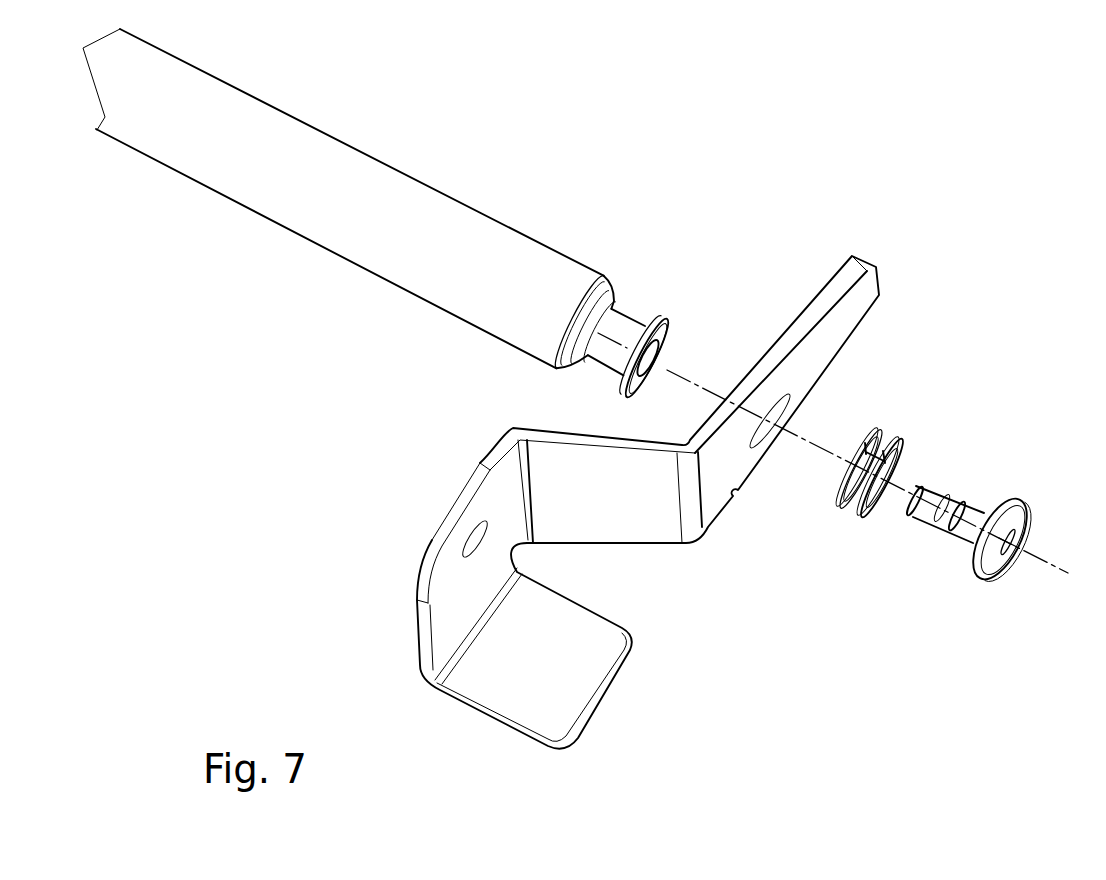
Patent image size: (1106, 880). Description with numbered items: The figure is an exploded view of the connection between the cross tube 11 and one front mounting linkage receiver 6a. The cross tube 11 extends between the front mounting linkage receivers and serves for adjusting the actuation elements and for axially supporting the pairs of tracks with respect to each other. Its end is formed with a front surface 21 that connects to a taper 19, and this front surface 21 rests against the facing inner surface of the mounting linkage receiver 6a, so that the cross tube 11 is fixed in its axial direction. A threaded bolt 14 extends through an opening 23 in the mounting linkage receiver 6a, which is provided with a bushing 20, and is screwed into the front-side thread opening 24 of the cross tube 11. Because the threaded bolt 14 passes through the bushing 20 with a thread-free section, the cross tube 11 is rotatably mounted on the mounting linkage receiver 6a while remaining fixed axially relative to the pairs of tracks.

The cross tube 11 is at (425, 217).
The taper 19 is at (629, 316).
The front-side thread opening 24 is at (659, 343).
The front surface 21 is at (657, 388).
The opening 23 is at (778, 412).
The bushing 20 is at (900, 442).
The threaded bolt 14 is at (1005, 505).
The mounting linkage receiver 6a is at (623, 510).